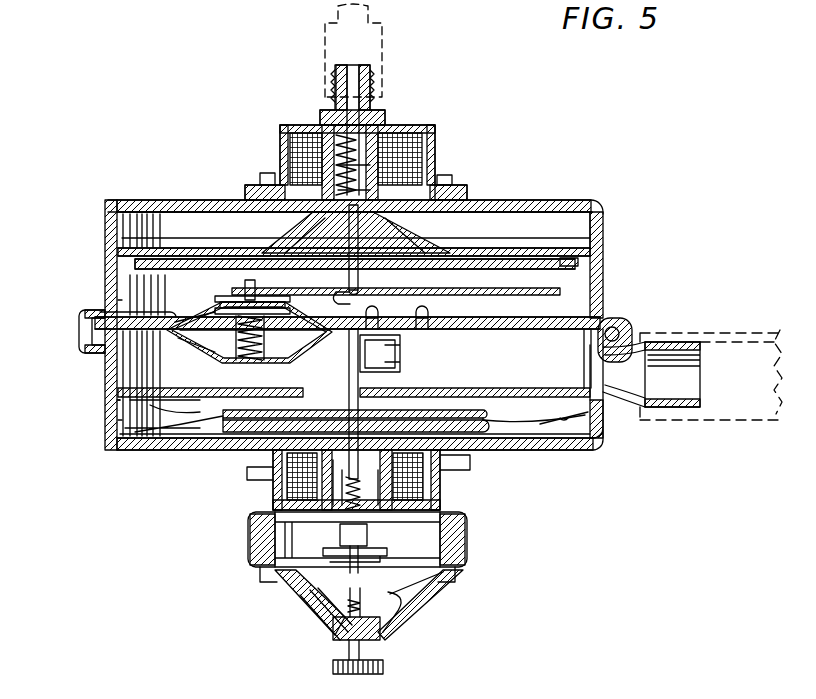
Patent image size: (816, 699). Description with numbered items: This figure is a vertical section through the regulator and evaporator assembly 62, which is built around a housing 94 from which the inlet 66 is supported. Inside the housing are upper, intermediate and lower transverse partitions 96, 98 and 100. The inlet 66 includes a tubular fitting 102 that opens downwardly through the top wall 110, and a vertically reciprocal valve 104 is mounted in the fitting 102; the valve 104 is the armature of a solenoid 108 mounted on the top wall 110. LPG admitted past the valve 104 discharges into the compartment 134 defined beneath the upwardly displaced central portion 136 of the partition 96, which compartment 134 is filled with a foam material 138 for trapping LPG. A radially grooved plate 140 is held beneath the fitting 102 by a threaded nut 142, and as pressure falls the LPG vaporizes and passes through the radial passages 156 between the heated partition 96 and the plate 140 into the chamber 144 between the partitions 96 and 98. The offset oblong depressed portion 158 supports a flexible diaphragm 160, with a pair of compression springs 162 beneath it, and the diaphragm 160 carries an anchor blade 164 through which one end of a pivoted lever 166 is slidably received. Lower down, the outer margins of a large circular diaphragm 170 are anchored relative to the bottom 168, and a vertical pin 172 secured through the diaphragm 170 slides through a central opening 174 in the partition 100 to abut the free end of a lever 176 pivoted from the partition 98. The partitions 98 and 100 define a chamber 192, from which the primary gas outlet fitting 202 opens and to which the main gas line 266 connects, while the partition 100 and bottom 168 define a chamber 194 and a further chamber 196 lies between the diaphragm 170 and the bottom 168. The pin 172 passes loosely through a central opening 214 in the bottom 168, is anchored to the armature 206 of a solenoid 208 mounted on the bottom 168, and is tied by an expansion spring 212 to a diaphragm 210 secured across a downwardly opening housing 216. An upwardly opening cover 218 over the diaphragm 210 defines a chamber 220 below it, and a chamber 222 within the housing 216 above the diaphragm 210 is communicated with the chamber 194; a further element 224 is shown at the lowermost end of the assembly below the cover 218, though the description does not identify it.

The regulator and evaporator assembly 62 is at (585, 198).
The inlet 66 is at (395, 115).
The housing 94 is at (112, 400).
The upper transverse partition 96 is at (150, 222).
The intermediate transverse partition 98 is at (555, 317).
The lower transverse partition 100 is at (130, 418).
The tubular fitting 102 is at (295, 160).
The valve 104 is at (436, 136).
The solenoid 108 is at (437, 165).
The top wall 110 is at (232, 200).
The compartment 134 is at (440, 265).
The upwardly displaced central portion 136 is at (268, 238).
The foam material 138 is at (405, 215).
The radially grooved plate 140 is at (497, 270).
The threaded nut 142 is at (380, 276).
The chamber 144 is at (176, 302).
The radial passages 156 is at (575, 262).
The offset oblong depressed portion 158 is at (105, 368).
The flexible diaphragm 160 is at (100, 310).
The compression springs 162 is at (240, 360).
The anchor blade 164 is at (252, 288).
The pivoted lever 166 is at (350, 296).
The bottom 168 is at (555, 465).
The large circular diaphragm 170 is at (185, 450).
The vertical pin 172 is at (400, 385).
The central opening 174 is at (345, 393).
The lever 176 is at (395, 357).
The chamber 192 is at (540, 366).
The chamber 194 is at (190, 422).
The chamber 196 is at (205, 447).
The primary gas outlet fitting 202 is at (652, 410).
The armature 206 is at (440, 497).
The solenoid 208 is at (280, 490).
The diaphragm 210 is at (292, 598).
The expansion spring 212 is at (345, 528).
The central opening 214 is at (270, 475).
The downwardly opening housing 216 is at (258, 545).
The upwardly opening cover 218 is at (310, 620).
The chamber 220 is at (400, 600).
The chamber 222 is at (428, 549).
The adjustment knob 224 is at (383, 668).
The main gas line 266 is at (740, 330).